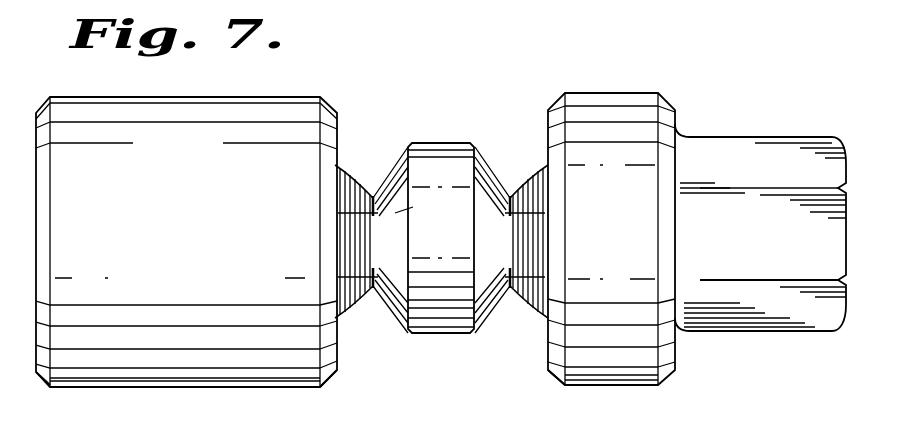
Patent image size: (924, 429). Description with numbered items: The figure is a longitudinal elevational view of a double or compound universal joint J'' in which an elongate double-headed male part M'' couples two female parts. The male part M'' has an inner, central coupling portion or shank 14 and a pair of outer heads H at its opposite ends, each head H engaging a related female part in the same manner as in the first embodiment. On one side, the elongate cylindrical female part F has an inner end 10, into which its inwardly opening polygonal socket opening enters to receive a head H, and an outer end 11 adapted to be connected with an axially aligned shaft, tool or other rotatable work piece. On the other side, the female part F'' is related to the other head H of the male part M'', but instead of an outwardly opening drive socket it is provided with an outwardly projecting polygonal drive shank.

The female part F is at (186, 220).
The head H is at (358, 170).
The double-headed male part M'' is at (441, 204).
The compound universal joint J'' is at (624, 209).
The female part F'' is at (760, 213).
The inner end 10 is at (340, 355).
The outer end 11 is at (45, 373).
The coupling shank 14 is at (440, 324).